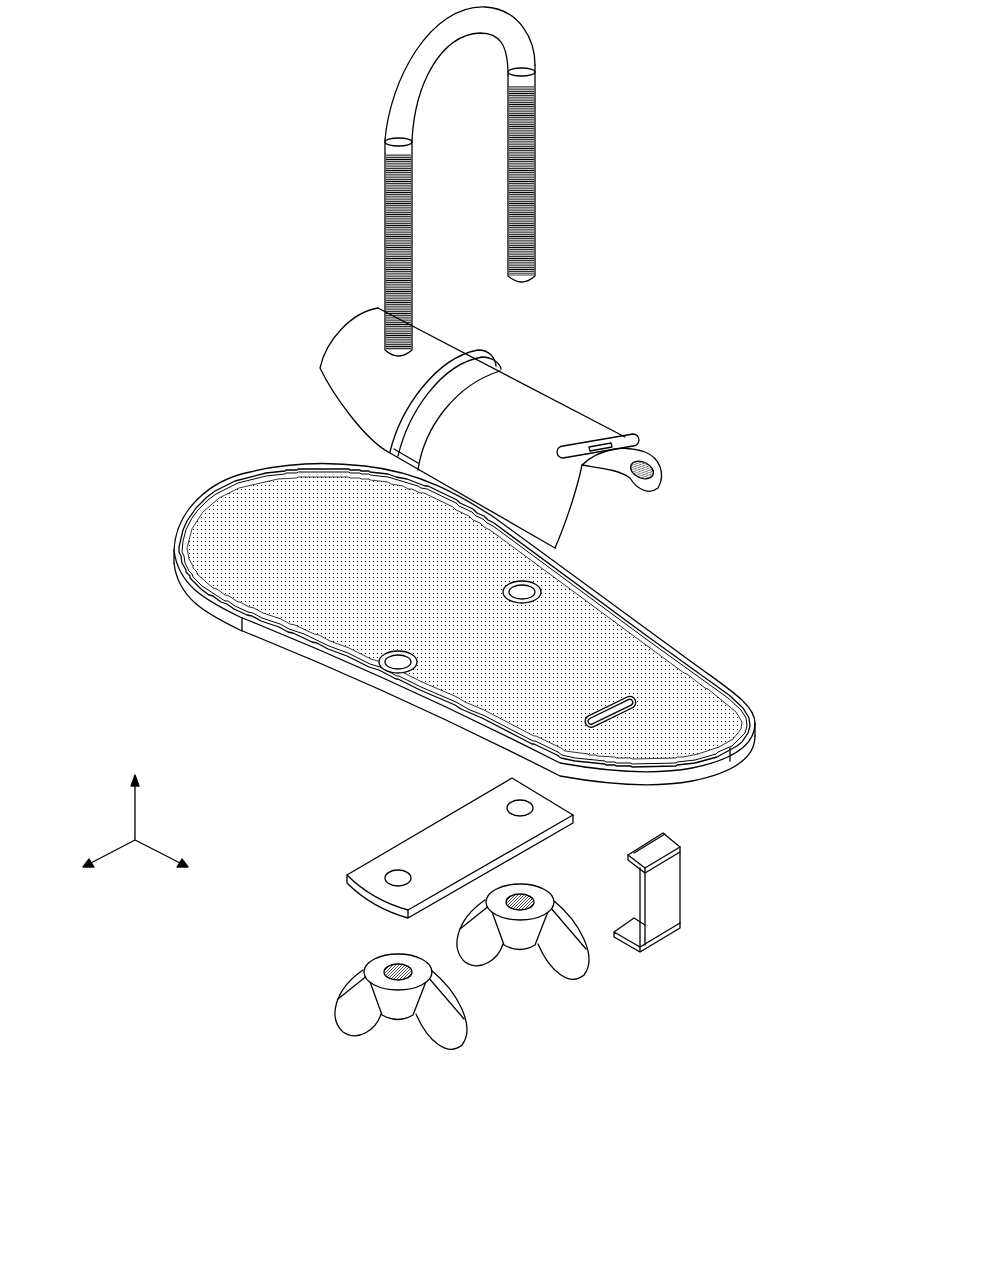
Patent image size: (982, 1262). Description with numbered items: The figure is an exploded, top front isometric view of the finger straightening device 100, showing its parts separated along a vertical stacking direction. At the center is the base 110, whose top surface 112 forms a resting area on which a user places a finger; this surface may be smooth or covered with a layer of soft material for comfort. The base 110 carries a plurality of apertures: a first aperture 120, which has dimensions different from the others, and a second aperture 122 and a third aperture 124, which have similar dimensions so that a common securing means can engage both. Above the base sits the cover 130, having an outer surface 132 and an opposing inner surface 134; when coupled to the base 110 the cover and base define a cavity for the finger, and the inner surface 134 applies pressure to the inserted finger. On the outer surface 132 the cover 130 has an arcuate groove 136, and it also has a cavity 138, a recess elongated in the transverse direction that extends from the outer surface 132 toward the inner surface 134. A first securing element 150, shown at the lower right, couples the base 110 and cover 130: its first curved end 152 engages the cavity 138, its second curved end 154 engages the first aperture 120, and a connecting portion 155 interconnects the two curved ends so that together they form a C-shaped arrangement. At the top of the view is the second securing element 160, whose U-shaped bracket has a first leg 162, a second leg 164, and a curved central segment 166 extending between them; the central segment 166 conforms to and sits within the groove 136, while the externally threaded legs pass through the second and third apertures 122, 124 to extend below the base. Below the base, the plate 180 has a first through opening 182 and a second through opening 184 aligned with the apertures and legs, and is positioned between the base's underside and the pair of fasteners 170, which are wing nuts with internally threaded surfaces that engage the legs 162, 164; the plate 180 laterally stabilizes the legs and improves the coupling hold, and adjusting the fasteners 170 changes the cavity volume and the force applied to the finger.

The finger straightening device 100 is at (277, 75).
The base 110 is at (165, 610).
The top surface 112 is at (235, 540).
The first aperture 120 is at (612, 707).
The second aperture 122 is at (397, 663).
The third aperture 124 is at (520, 593).
The cover 130 is at (627, 373).
The outer surface 132 is at (520, 400).
The inner surface 134 is at (632, 480).
The groove 136 is at (473, 365).
The cavity 138 is at (600, 437).
The first securing element 150 is at (707, 883).
The first curved end 152 is at (612, 860).
The second curved end 154 is at (628, 935).
The connecting portion 155 is at (672, 893).
The second securing element 160 is at (580, 120).
The first leg 162 is at (385, 250).
The second leg 164 is at (537, 195).
The curved central segment 166 is at (445, 38).
The fasteners 170 is at (385, 1043).
The plate 180 is at (355, 908).
The first through opening 182 is at (398, 877).
The second through opening 184 is at (520, 805).